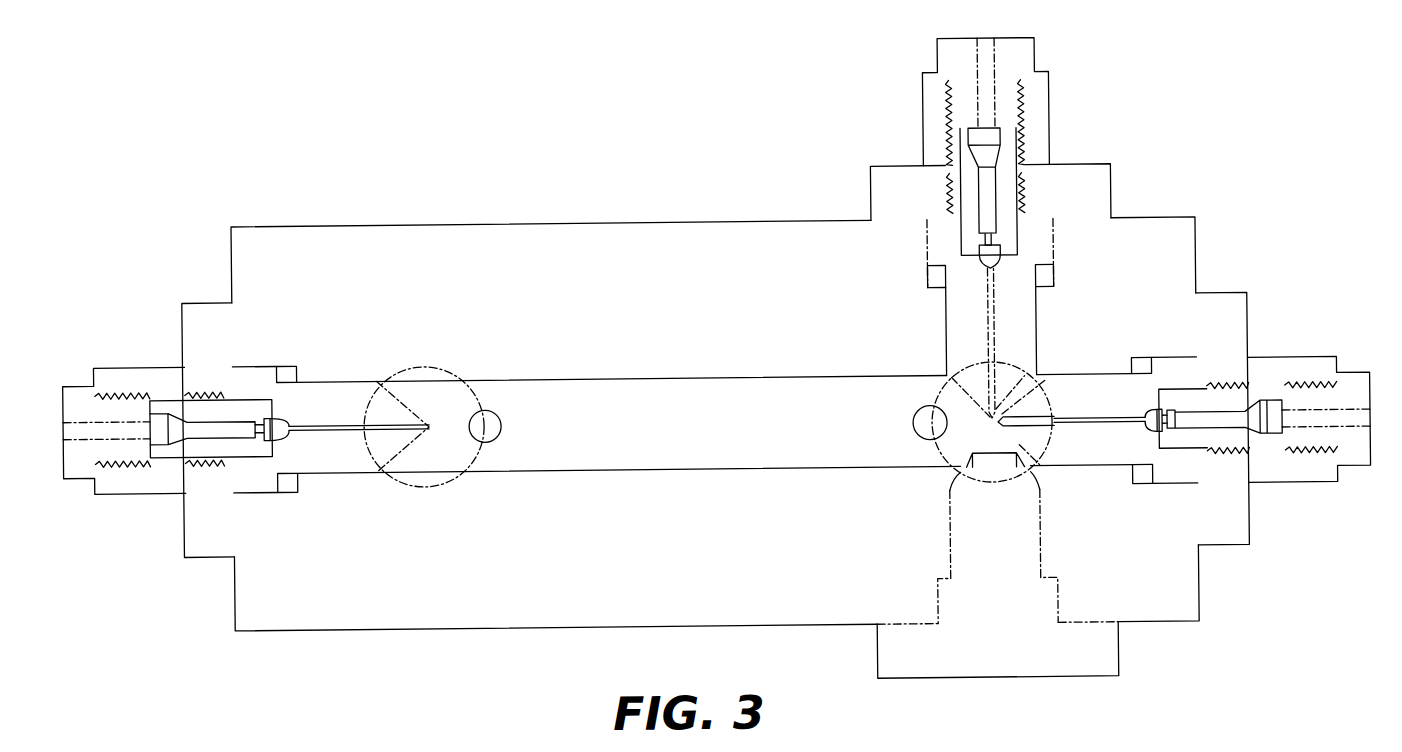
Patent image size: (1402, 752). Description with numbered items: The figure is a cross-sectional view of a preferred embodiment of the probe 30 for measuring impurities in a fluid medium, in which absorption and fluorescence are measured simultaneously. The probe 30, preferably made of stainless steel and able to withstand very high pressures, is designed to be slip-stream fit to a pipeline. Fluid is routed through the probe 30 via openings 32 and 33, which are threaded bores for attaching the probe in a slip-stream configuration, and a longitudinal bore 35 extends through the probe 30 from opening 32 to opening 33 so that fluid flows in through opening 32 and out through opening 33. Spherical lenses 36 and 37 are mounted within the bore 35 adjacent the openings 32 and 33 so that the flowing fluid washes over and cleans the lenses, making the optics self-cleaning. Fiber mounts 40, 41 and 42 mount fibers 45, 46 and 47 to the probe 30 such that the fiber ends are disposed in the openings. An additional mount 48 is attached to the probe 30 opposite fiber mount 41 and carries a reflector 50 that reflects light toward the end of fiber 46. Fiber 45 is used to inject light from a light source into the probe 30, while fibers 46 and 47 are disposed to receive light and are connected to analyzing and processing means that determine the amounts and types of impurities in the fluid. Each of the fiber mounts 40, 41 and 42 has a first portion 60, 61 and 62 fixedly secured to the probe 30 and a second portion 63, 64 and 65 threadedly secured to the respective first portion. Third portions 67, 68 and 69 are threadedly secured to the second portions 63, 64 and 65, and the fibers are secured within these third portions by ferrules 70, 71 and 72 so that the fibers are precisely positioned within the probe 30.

The probe 30 is at (692, 108).
The opening 32 is at (443, 370).
The opening 33 is at (932, 405).
The longitudinal bore 35 is at (635, 399).
The spherical lens 36 is at (497, 420).
The spherical lens 37 is at (915, 420).
The fiber mount 40 is at (1232, 321).
The fiber mount 41 is at (1088, 184).
The fiber mount 42 is at (185, 319).
The fiber 45 is at (1088, 426).
The fiber 46 is at (998, 343).
The fiber 47 is at (343, 426).
The additional mount 48 is at (1090, 672).
The reflector 50 is at (995, 470).
The first portion 60 is at (1175, 487).
The first portion 61 is at (1043, 264).
The first portion 62 is at (258, 378).
The second portion 63 is at (1292, 378).
The second portion 64 is at (1037, 99).
The second portion 65 is at (115, 377).
The third portion 67 is at (1273, 443).
The third portion 68 is at (960, 139).
The third portion 69 is at (157, 456).
The ferrule 70 is at (1147, 440).
The ferrule 71 is at (982, 268).
The ferrule 72 is at (278, 431).